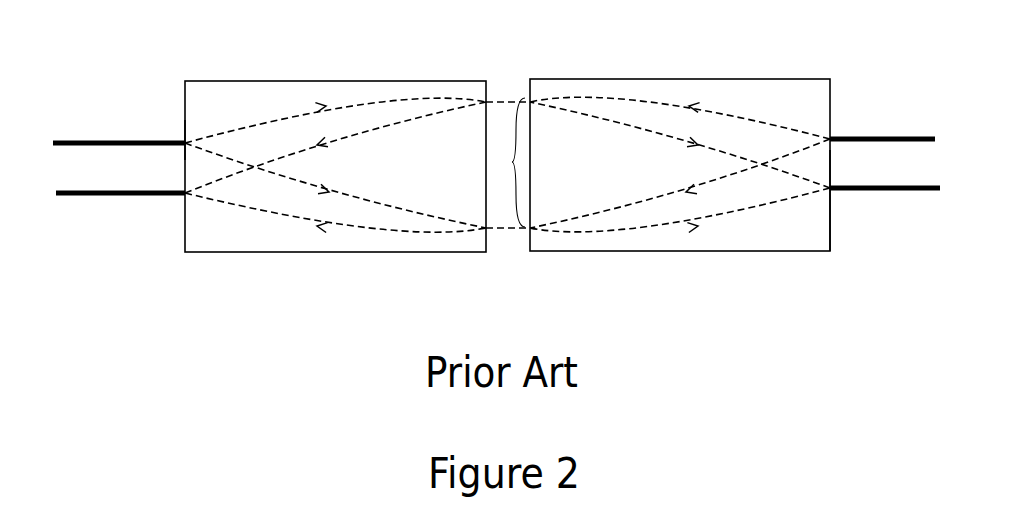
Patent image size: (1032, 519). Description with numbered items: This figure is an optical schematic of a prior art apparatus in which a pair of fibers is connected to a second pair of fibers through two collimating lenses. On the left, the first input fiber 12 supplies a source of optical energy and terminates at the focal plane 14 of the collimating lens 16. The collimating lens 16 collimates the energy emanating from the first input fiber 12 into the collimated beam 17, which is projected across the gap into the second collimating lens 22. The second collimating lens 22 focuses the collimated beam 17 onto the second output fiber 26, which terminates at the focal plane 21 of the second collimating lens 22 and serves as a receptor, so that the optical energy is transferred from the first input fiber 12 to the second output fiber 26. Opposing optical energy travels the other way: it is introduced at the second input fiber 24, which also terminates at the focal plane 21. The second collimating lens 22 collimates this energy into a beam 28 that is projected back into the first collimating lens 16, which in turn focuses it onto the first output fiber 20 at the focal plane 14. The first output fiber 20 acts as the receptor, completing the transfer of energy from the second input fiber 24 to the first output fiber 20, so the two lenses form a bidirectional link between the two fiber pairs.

The first input fiber 12 is at (120, 130).
The focal plane 14 is at (185, 131).
The collimating lens 16 is at (311, 70).
The collimated beam 17 is at (508, 132).
The first output fiber 20 is at (132, 183).
The focal plane 21 is at (838, 217).
The second collimating lens 22 is at (703, 70).
The second input fiber 24 is at (915, 123).
The second output fiber 26 is at (920, 177).
The beam 28 is at (508, 195).